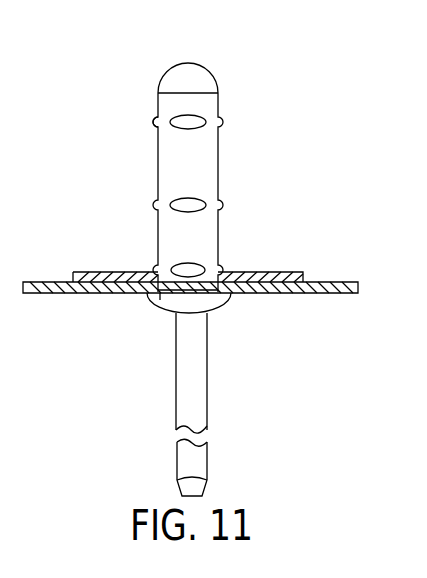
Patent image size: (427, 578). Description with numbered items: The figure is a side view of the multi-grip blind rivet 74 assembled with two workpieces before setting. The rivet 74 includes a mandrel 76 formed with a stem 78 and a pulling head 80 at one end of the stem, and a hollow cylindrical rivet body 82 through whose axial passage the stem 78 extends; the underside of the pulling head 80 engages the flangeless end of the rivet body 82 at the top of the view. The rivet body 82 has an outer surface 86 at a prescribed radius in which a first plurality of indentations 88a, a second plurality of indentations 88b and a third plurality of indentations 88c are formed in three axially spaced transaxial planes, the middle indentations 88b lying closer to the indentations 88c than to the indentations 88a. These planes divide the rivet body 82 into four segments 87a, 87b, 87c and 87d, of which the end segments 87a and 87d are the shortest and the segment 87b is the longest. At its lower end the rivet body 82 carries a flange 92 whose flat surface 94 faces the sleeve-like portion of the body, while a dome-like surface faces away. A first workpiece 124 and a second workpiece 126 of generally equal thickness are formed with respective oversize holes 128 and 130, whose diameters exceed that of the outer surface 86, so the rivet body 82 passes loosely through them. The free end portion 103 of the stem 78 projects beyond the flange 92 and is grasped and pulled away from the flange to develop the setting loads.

The multi-grip blind rivet 74 is at (140, 92).
The mandrel 76 is at (217, 383).
The stem 78 is at (198, 465).
The pulling head 80 is at (187, 72).
The rivet body 82 is at (232, 98).
The outer surface 86 is at (160, 112).
The first segment 87a is at (214, 101).
The second segment 87b is at (212, 158).
The third segment 87c is at (213, 240).
The fourth segment 87d is at (200, 285).
The first plurality of indentations 88a is at (232, 119).
The second plurality of indentations 88b is at (231, 201).
The third plurality of indentations 88c is at (149, 258).
The flange 92 is at (135, 317).
The flat surface 94 is at (167, 290).
The free end portion 103 is at (177, 460).
The first workpiece 124 is at (300, 277).
The second workpiece 126 is at (352, 288).
The oversize hole 128 is at (226, 273).
The oversize hole 130 is at (232, 292).